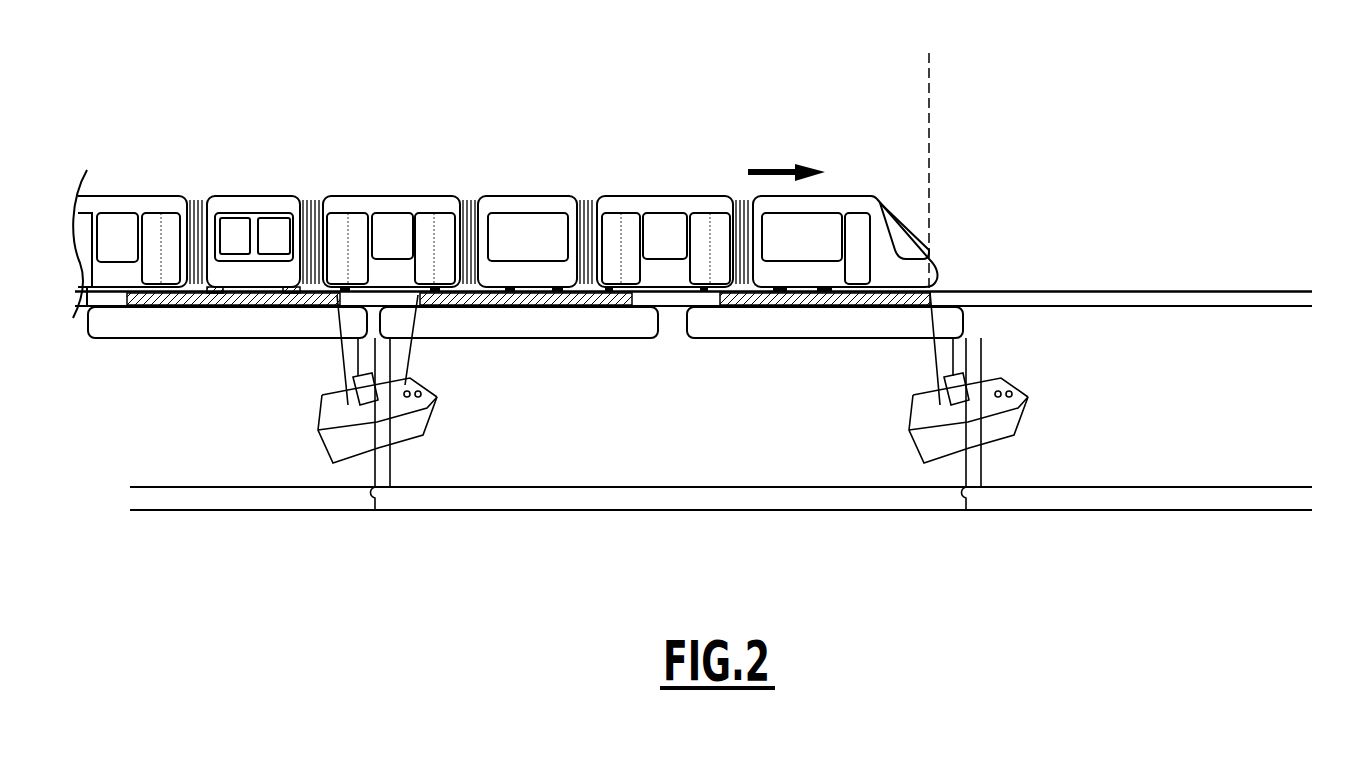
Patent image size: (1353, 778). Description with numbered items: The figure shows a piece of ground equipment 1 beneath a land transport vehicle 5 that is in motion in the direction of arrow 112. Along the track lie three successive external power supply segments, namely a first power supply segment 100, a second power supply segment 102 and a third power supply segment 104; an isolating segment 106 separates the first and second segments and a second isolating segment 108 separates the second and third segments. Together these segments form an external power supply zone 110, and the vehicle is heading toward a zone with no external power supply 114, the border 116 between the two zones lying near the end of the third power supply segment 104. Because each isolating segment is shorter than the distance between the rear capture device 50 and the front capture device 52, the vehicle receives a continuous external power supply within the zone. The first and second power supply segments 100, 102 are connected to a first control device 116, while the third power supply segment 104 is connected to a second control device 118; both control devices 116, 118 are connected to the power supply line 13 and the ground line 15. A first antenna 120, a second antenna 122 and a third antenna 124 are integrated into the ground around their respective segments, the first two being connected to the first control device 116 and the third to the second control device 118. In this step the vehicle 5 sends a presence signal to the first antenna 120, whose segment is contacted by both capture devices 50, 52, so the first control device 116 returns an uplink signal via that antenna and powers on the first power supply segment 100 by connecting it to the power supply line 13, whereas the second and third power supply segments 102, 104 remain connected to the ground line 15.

The ground equipment 1 is at (1007, 328).
The land transport vehicle 5 is at (627, 237).
The power supply line 13 is at (178, 485).
The ground line 15 is at (266, 512).
The rear capture device 50 is at (201, 196).
The front capture device 52 is at (310, 197).
The first power supply segment 100 is at (163, 307).
The second power supply segment 102 is at (518, 307).
The third power supply segment 104 is at (847, 300).
The isolating segment 106 is at (385, 297).
The second isolating segment 108 is at (667, 307).
The external power supply zone 110 is at (505, 184).
The arrow 112 is at (758, 168).
The zone with no external power supply 114 is at (1155, 182).
The first control device 116 is at (929, 114).
The second control device 118 is at (918, 415).
The first antenna 120 is at (254, 331).
The second antenna 122 is at (477, 324).
The third antenna 124 is at (775, 326).